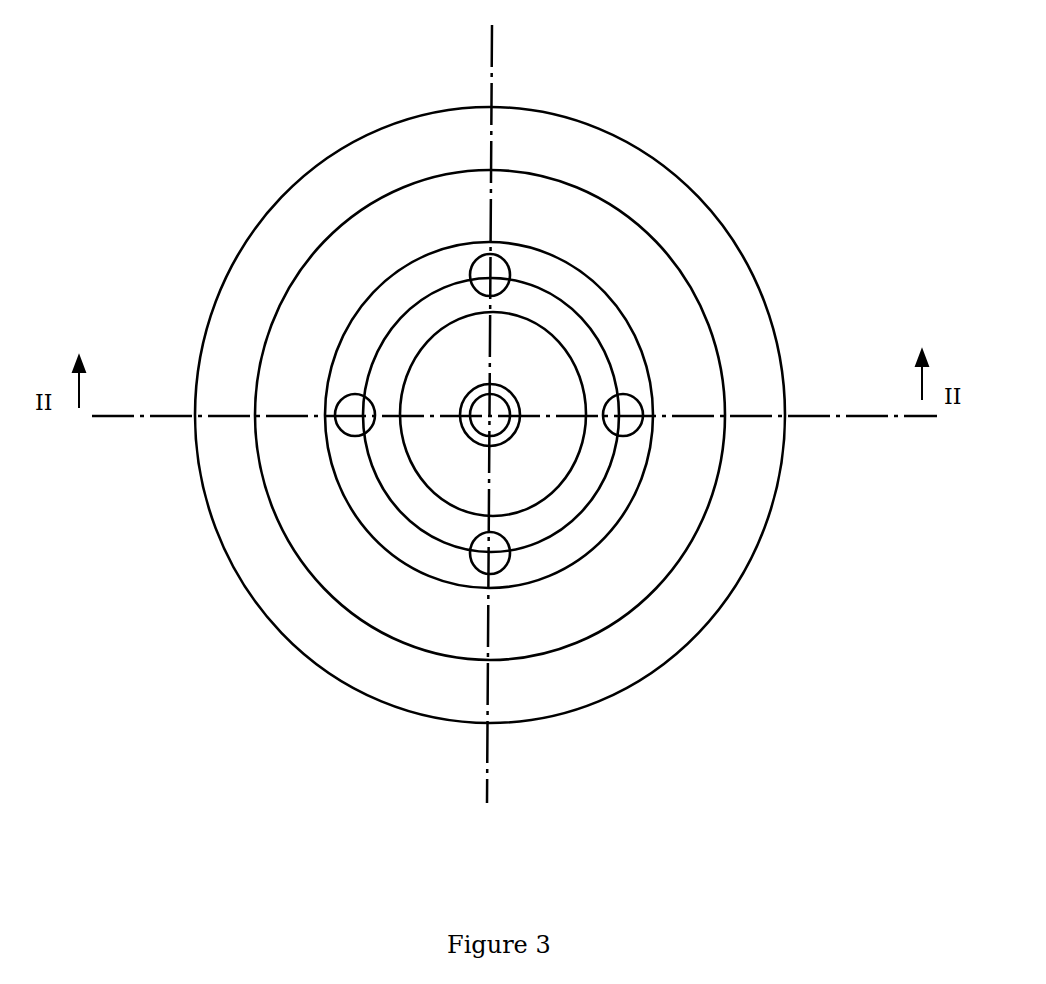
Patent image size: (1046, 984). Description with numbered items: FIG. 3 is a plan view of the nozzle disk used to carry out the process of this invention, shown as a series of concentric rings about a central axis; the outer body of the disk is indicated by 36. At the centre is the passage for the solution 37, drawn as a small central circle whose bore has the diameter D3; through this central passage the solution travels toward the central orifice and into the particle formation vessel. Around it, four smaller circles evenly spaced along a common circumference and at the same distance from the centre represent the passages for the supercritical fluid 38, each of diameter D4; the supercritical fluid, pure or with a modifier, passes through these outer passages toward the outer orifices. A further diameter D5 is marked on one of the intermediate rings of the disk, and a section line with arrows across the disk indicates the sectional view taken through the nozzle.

The flange plate 36 is at (330, 288).
The solution 37 is at (510, 430).
The supercritical fluid 38 is at (482, 267).
The diameter of the central passage D3 is at (507, 398).
The diameter of the outer passages D4 is at (508, 256).
The diameter of ring D5 is at (606, 344).